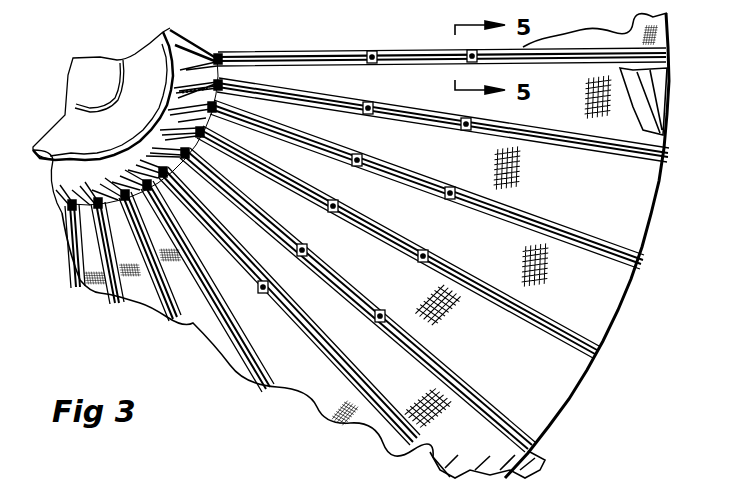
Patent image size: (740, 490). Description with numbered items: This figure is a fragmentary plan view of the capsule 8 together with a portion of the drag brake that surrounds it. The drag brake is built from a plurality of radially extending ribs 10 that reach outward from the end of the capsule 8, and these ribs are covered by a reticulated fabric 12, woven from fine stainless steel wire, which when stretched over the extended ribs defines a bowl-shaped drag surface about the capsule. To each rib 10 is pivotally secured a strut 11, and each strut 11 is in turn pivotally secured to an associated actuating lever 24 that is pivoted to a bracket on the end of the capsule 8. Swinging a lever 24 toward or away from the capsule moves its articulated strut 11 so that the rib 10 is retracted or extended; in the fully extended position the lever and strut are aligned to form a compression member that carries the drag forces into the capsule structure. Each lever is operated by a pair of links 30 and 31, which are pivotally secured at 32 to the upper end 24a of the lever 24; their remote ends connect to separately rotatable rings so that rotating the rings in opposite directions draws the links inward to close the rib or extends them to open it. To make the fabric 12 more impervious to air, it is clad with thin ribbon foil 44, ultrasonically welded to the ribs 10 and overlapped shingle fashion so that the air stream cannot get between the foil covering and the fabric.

The capsule 8 is at (95, 85).
The link 30 is at (187, 47).
The link 31 is at (178, 66).
The pivot 32 is at (220, 56).
The actuating lever 24 is at (442, 46).
The upper end of the lever 24a is at (262, 57).
The reticulated fabric 12 is at (612, 207).
The strut 11 is at (362, 295).
The rib 10 is at (462, 380).
The ribbon foil 44 is at (668, 72).